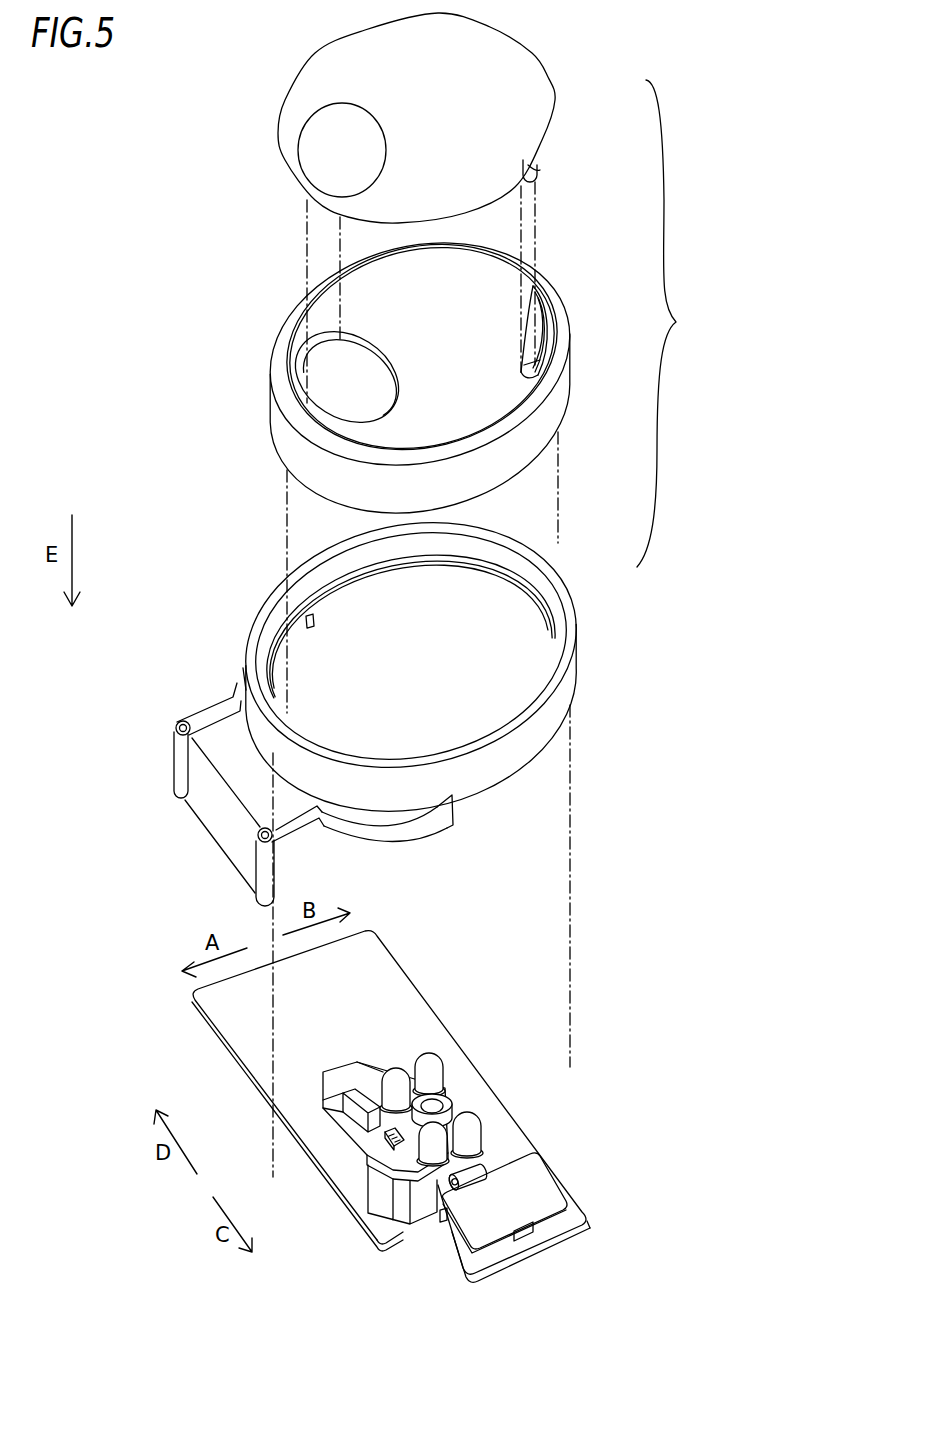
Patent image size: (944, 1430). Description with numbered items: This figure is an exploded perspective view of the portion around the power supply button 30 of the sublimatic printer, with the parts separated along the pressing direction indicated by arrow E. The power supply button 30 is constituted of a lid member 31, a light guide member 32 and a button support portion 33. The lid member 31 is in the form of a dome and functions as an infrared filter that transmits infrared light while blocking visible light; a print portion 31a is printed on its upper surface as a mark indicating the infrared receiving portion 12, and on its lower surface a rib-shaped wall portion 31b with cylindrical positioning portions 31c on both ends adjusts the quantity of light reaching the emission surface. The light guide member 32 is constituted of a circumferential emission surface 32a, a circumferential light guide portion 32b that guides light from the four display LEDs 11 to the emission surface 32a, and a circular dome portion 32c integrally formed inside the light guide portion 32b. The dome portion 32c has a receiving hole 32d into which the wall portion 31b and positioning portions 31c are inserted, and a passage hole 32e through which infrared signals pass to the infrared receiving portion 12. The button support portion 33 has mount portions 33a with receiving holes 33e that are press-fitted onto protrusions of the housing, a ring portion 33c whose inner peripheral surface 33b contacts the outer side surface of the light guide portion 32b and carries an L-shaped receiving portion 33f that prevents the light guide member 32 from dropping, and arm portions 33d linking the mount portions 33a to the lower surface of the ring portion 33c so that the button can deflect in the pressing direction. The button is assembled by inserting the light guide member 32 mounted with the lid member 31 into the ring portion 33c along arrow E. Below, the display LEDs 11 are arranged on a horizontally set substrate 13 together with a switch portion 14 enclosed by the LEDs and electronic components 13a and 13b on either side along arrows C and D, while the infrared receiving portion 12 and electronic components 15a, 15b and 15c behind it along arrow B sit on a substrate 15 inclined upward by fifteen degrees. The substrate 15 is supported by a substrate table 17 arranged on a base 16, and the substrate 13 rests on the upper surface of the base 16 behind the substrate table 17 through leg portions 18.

The power supply button 30 is at (676, 323).
The lid member 31 is at (419, 118).
The print portion 31a is at (306, 140).
The wall portion 31b is at (538, 172).
The positioning portions 31c is at (533, 182).
The light guide member 32 is at (432, 362).
The circumferential emission surface 32a is at (280, 373).
The circumferential light guide portion 32b is at (270, 417).
The dome portion 32c is at (350, 318).
The receiving hole 32d is at (531, 365).
The passage hole 32e is at (303, 342).
The button support portion 33 is at (388, 699).
The mount portions 33a is at (185, 718).
The inner peripheral surface 33b is at (297, 603).
The ring portion 33c is at (565, 695).
The arm portions 33d is at (243, 668).
The receiving holes 33e is at (176, 723).
The L-shaped receiving portion 33f is at (283, 620).
The display LEDs 11 is at (464, 1052).
The infrared receiving portion 12 is at (363, 1107).
The substrate 13 is at (512, 1196).
The electronic component 13a is at (470, 1177).
The electronic component 13b is at (412, 1058).
The switch portion 14 is at (437, 1107).
The substrate 15 is at (334, 1088).
The electronic component 15a is at (383, 1087).
The electronic component 15b is at (390, 1145).
The electronic component 15c is at (387, 1142).
The base 16 is at (237, 1008).
The substrate table 17 is at (350, 1162).
The leg portions 18 is at (442, 1213).